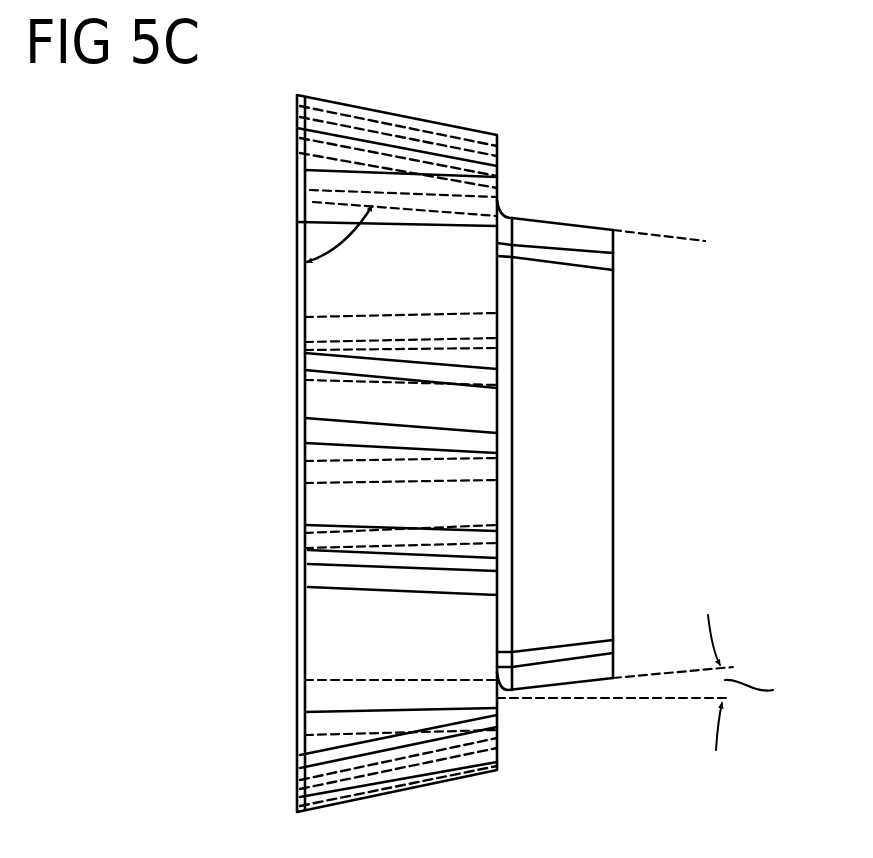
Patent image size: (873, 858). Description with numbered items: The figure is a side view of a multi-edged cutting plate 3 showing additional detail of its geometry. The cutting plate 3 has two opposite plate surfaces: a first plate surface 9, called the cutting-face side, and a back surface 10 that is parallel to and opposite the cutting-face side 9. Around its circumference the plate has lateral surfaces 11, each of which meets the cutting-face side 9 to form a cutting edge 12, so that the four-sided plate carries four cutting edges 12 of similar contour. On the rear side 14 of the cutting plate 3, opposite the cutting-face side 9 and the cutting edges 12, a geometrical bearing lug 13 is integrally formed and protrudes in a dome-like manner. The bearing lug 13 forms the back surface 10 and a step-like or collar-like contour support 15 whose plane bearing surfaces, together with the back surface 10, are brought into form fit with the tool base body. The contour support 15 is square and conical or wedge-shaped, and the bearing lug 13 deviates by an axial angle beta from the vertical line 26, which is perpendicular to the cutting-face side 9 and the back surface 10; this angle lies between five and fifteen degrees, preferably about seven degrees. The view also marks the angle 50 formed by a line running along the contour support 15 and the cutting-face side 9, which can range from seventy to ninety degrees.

The cutting plate 3 is at (330, 503).
The plate surface 9 is at (298, 652).
The back surface 10 is at (613, 495).
The lateral surfaces 11 is at (345, 292).
The cutting edge 12 is at (300, 212).
The geometrical bearing lug 13 is at (580, 361).
The rear side 14 is at (497, 181).
The contour support 15 is at (577, 224).
The vertical line 26 is at (618, 701).
The angle 50 is at (300, 238).